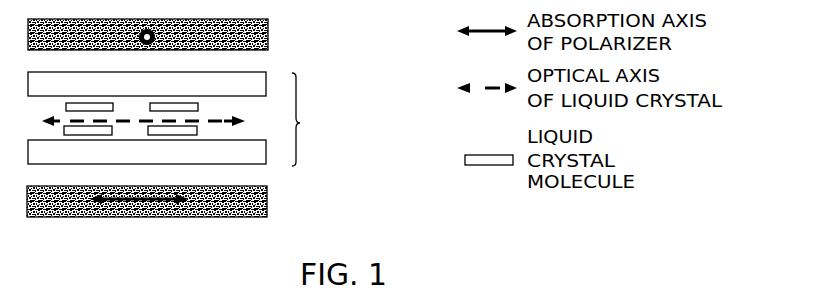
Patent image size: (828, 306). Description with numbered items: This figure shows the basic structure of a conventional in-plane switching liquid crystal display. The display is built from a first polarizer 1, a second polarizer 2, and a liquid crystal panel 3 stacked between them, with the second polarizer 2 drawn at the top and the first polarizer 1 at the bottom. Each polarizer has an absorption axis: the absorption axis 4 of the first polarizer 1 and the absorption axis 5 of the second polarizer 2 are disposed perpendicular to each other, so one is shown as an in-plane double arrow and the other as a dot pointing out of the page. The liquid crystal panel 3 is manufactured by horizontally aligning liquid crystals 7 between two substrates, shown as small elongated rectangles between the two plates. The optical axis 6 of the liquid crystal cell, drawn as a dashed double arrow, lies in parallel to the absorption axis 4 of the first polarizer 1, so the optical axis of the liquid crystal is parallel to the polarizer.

The first polarizer 1 is at (226, 203).
The second polarizer 2 is at (225, 38).
The liquid crystal panel 3 is at (225, 119).
The absorption axis 4 is at (165, 202).
The absorption axis 5 is at (189, 38).
The optical axis 6 is at (158, 120).
The liquid crystals 7 is at (144, 117).